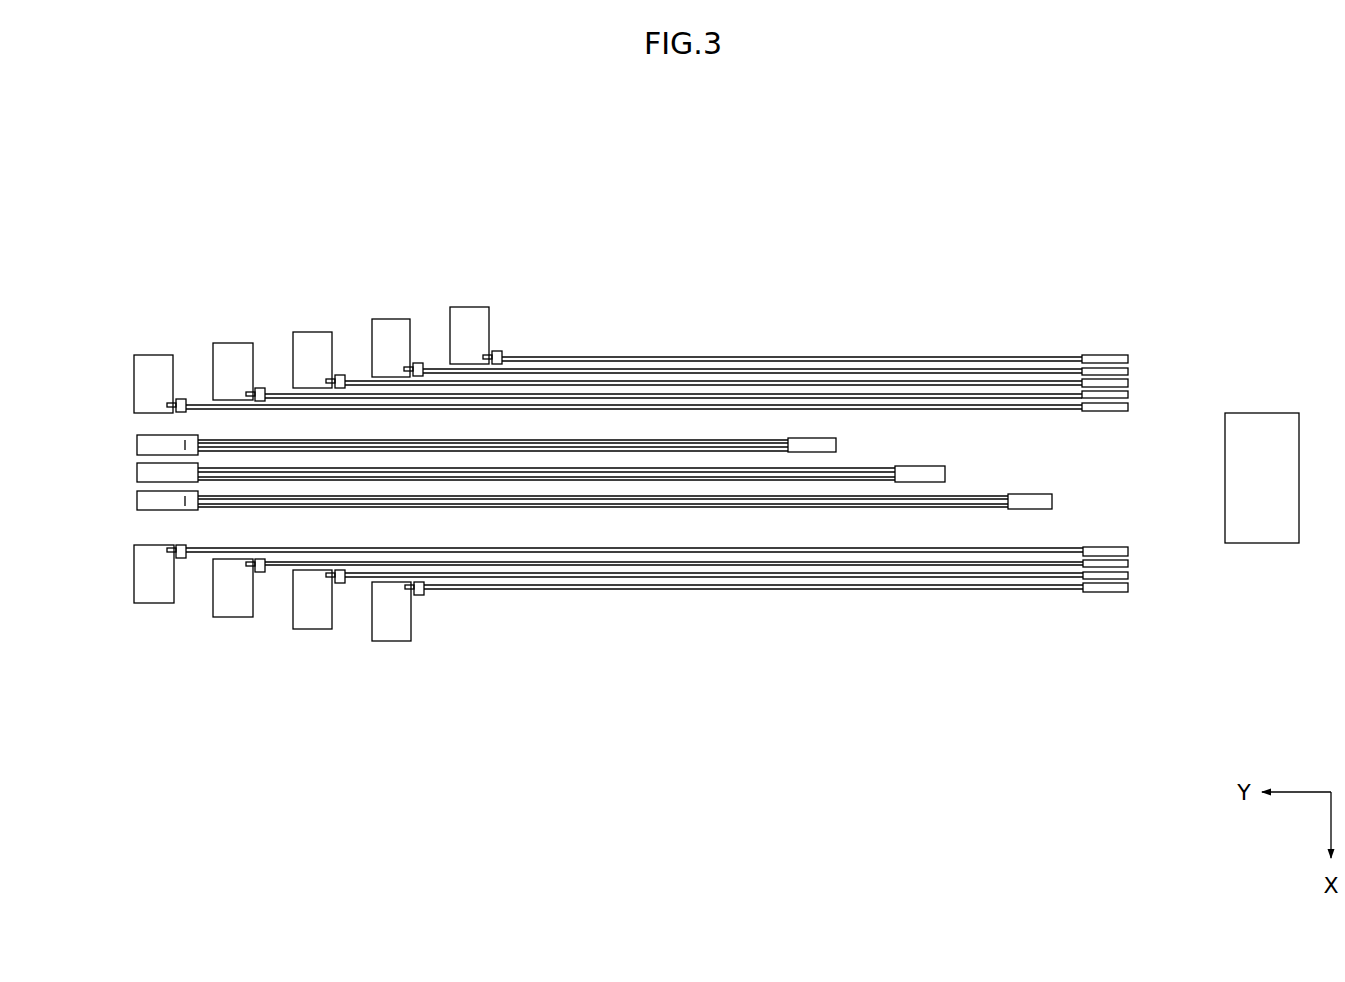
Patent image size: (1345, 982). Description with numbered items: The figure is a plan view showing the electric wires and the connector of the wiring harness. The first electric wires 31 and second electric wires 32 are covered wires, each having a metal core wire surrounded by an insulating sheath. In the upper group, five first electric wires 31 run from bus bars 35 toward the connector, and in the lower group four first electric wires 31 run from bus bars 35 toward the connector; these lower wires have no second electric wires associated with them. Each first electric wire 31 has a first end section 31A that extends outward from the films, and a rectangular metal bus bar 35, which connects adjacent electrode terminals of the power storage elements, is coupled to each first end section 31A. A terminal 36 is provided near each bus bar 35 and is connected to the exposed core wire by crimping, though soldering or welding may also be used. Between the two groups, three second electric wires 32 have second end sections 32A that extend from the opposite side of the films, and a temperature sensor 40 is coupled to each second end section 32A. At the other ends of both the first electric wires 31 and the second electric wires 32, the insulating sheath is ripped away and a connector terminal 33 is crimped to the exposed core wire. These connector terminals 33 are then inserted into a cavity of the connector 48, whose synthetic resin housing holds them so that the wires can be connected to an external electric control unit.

The first electric wire 31 is at (625, 480).
The first end section 31A is at (313, 475).
The second electric wire 32 is at (518, 474).
The second end section 32A is at (130, 444).
The connector terminal 33 is at (1128, 359).
The bus bar 35 is at (141, 389).
The terminal 36 is at (181, 398).
The temperature sensor 40 is at (186, 446).
The connector 48 is at (1259, 433).